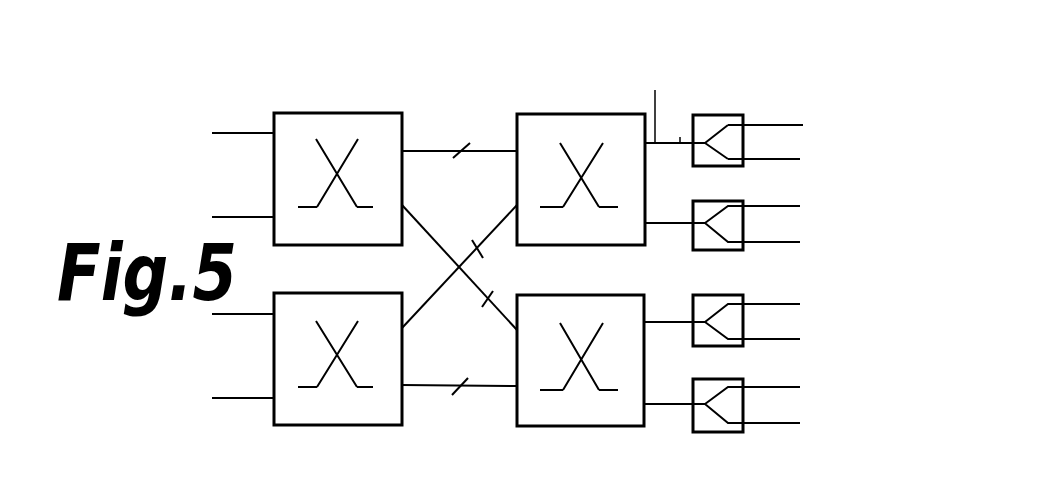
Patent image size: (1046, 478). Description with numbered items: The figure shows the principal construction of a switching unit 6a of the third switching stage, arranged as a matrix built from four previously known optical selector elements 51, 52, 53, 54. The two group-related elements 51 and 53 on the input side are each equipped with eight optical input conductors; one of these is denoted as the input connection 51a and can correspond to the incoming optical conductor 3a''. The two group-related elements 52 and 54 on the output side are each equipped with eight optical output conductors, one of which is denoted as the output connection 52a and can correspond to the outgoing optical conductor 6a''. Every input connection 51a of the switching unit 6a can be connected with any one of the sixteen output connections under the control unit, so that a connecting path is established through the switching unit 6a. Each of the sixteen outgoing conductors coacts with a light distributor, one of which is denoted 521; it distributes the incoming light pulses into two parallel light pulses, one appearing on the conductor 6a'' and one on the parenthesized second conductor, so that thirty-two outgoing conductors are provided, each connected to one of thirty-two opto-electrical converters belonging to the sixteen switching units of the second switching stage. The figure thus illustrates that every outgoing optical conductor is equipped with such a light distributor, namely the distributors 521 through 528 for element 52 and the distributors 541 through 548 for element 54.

The optical conductor 3a'' is at (219, 101).
The input connection 51a is at (262, 131).
The optical selector element 51 is at (378, 112).
The optical selector element 52 is at (555, 113).
The output connection 52a is at (655, 142).
The optical selector element 53 is at (297, 425).
The optical selector element 54 is at (530, 426).
The switching unit 6a is at (692, 88).
The optical conductor 6a'' is at (780, 93).
The light distributor 521 is at (745, 115).
The light distributor 528 is at (731, 250).
The light distributor 541 is at (744, 295).
The light distributor 548 is at (735, 432).